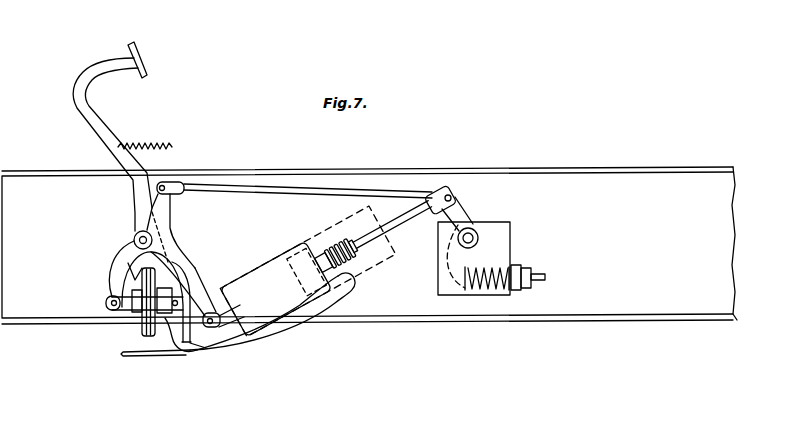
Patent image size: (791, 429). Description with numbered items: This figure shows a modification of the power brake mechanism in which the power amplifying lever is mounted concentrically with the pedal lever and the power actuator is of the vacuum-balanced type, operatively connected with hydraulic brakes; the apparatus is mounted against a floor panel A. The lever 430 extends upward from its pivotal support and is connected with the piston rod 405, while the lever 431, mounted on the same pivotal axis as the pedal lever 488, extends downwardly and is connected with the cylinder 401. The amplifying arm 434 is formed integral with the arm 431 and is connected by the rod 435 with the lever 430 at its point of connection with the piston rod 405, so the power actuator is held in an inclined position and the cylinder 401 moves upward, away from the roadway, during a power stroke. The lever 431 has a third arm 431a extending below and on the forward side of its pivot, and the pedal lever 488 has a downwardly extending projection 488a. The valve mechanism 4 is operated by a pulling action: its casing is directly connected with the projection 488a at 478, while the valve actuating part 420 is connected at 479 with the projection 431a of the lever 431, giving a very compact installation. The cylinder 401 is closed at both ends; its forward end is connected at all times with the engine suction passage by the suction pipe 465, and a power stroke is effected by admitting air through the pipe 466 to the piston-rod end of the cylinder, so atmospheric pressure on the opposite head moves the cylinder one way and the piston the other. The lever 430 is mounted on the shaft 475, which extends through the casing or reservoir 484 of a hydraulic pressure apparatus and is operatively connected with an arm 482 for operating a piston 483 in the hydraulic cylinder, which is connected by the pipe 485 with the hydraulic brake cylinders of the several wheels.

The floor board panel A is at (608, 178).
The pedal lever 488 is at (112, 138).
The downwardly extending projection 488a is at (177, 275).
The amplifying arm 434 is at (170, 217).
The lever 431 is at (188, 252).
The third arm 431a is at (108, 264).
The valve mechanism 4 is at (139, 267).
The valve actuating part 420 is at (128, 308).
The connection 479 is at (106, 303).
The suction pipe 465 is at (145, 356).
The connection of valve casing 478 is at (171, 352).
The pipe 466 is at (292, 333).
The rod 435 is at (282, 191).
The cylinder 401 is at (282, 246).
The piston rod 405 is at (423, 210).
The lever 430 is at (459, 203).
The shaft 475 is at (473, 238).
The hydraulic pressure apparatus casing 484 is at (507, 247).
The arm 482 is at (443, 273).
The piston 483 is at (465, 289).
The pipe 485 is at (543, 278).